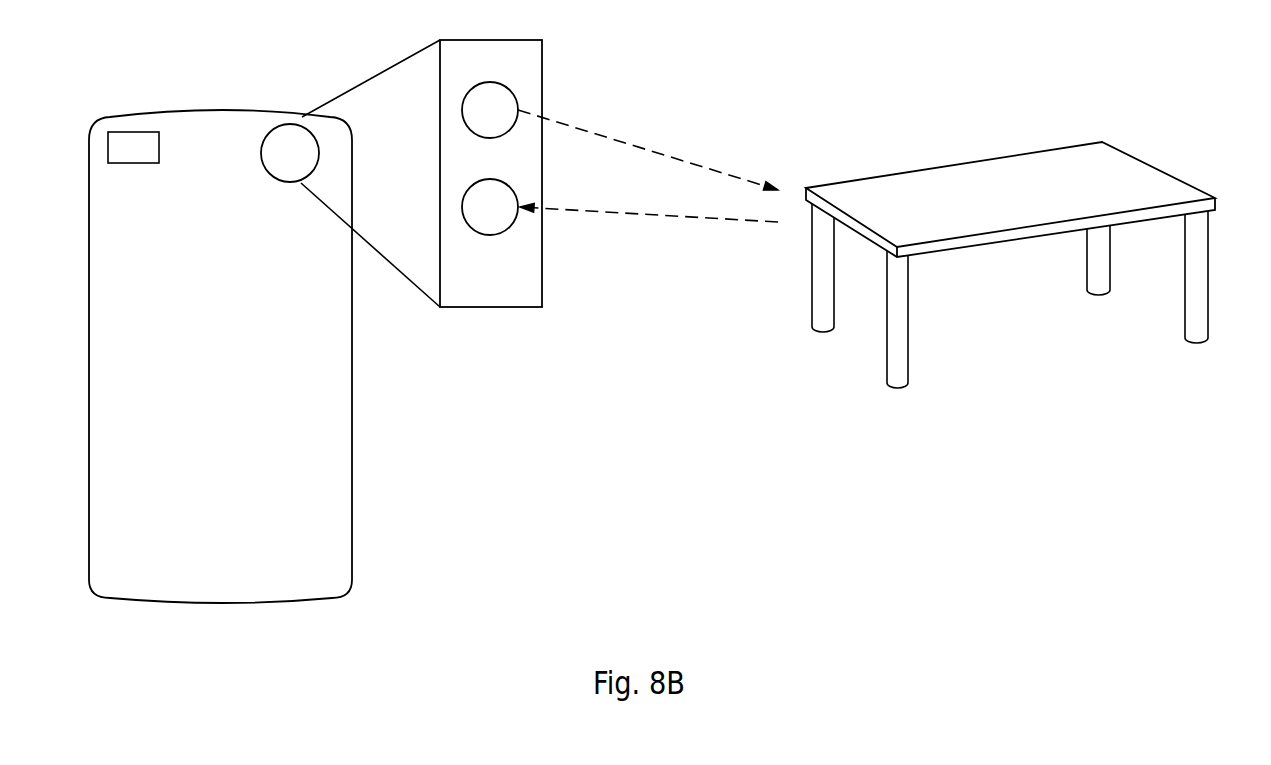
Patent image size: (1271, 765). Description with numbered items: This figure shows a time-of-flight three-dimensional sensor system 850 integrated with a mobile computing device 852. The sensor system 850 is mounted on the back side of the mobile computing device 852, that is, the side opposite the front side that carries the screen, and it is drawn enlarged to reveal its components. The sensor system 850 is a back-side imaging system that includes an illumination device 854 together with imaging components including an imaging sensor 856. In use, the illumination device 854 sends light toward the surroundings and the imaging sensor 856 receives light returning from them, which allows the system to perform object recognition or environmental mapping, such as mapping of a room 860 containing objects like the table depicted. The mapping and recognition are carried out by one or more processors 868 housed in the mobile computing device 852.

The 3D sensor system 850 is at (309, 167).
The mobile computing device 852 is at (148, 585).
The illumination device 854 is at (509, 124).
The imaging sensor 856 is at (509, 221).
The room 860 is at (1032, 340).
The processors 868 is at (133, 147).